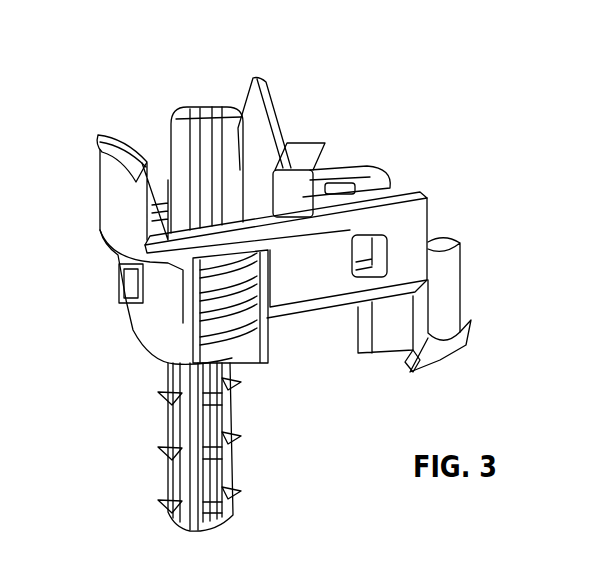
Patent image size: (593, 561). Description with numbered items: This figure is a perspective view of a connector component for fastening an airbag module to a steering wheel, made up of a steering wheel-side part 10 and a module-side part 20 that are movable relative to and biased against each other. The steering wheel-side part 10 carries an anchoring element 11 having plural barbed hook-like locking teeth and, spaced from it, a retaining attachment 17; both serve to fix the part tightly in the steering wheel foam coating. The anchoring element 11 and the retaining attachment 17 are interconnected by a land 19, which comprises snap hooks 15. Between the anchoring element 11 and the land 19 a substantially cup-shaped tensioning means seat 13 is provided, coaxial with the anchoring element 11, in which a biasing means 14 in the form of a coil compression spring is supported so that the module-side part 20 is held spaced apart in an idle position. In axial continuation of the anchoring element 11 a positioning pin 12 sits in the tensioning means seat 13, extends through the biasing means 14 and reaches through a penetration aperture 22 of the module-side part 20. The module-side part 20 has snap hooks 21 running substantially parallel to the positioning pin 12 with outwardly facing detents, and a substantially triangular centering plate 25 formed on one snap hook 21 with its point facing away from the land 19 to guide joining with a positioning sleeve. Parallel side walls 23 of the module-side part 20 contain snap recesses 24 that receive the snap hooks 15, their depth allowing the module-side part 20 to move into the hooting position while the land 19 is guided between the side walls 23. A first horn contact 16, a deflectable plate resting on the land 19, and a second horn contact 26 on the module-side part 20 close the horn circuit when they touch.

The steering wheel-side part 10 is at (452, 290).
The anchoring element 11 is at (186, 484).
The positioning pin 12 is at (187, 112).
The tensioning means seat 13 is at (256, 372).
The biasing means 14 is at (255, 316).
The snap hooks 15 is at (358, 302).
The first horn contact 16 is at (432, 234).
The retaining attachment 17 is at (439, 352).
The land 19 is at (330, 300).
The module-side part 20 is at (102, 227).
The snap hooks 21 is at (97, 150).
The penetration aperture 22 is at (163, 198).
The side walls 23 is at (323, 257).
The snap recesses 24 is at (367, 243).
The centering plate 25 is at (275, 92).
The second horn contact 26 is at (318, 210).